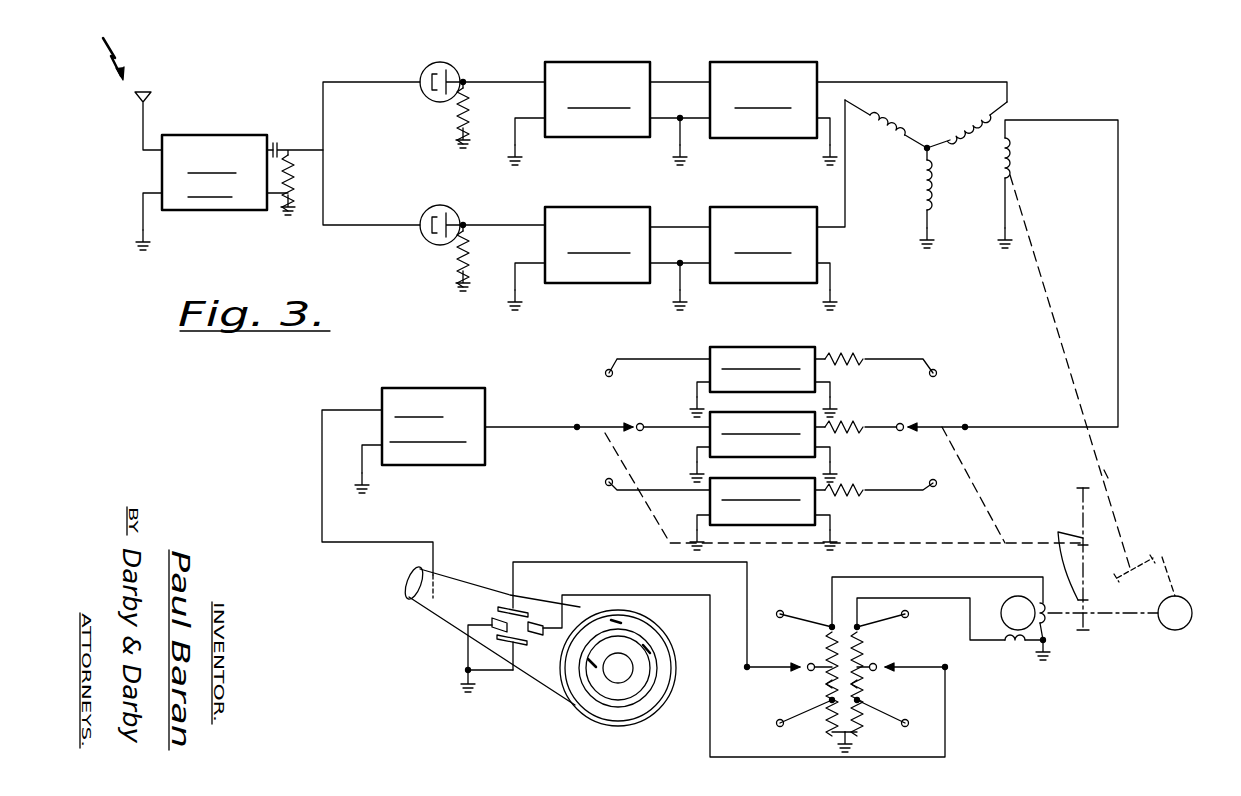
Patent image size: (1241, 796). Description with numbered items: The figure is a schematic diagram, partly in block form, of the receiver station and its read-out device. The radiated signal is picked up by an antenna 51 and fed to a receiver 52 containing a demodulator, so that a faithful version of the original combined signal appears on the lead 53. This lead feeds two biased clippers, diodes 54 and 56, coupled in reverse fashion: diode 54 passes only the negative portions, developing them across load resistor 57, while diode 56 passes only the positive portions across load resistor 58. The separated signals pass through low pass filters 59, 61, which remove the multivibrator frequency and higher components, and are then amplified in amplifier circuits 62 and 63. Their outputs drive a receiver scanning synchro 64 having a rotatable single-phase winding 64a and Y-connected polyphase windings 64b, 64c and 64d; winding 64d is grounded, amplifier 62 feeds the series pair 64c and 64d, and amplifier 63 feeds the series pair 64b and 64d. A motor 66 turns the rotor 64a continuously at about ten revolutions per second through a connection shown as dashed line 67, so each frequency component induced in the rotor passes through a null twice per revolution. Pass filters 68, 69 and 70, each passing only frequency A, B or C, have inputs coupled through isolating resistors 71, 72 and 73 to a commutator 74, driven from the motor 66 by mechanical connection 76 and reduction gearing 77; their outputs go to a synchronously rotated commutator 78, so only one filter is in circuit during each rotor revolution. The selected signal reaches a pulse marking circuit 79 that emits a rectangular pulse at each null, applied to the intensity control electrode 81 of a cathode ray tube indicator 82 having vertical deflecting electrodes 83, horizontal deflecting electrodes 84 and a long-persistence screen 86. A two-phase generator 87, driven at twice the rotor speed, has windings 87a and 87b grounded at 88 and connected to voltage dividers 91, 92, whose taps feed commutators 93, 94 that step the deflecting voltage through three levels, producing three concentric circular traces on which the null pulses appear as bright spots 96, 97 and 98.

The antenna 51 is at (148, 100).
The receiver 52 is at (205, 135).
The lead 53 is at (275, 140).
The diode 54 is at (450, 65).
The diode 56 is at (428, 240).
The load resistor 57 is at (463, 100).
The load resistor 58 is at (463, 250).
The low pass filter 59 is at (650, 62).
The low pass filter 61 is at (545, 207).
The amplifier 62 is at (817, 62).
The amplifier 63 is at (810, 215).
The receiver scanning synchro 64 is at (981, 233).
The rotor winding 64a is at (1010, 150).
The polyphase winding 64b is at (895, 120).
The polyphase winding 64c is at (965, 118).
The polyphase winding 64d is at (920, 185).
The motor 66 is at (1187, 598).
The dashed line 67 is at (1108, 475).
The pass filter 68 is at (745, 347).
The pass filter 69 is at (770, 436).
The pass filter 70 is at (1180, 520).
The isolating resistor 71 is at (845, 355).
The isolating resistor 72 is at (845, 423).
The isolating resistor 73 is at (845, 486).
The commutator 74 is at (942, 427).
The mechanical connection 76 is at (973, 485).
The reduction gearing 77 is at (1060, 559).
The commutator 78 is at (588, 432).
The pulse marking circuit 79 is at (425, 388).
The intensity control electrode 81 is at (412, 590).
The cathode ray tube indicator 82 is at (530, 673).
The vertical deflecting electrodes 83 is at (517, 637).
The horizontal deflecting electrodes 84 is at (520, 633).
The screen 86 is at (645, 722).
The two-phase generator 87 is at (1052, 661).
The generator winding 87a is at (1012, 642).
The generator winding 87b is at (1045, 620).
The ground 88 is at (1055, 652).
The voltage divider 91 is at (832, 685).
The voltage divider 92 is at (857, 690).
The commutator 93 is at (760, 668).
The commutator 94 is at (917, 667).
The bright spot 96 is at (616, 622).
The indication 97 is at (647, 650).
The indication 98 is at (593, 663).